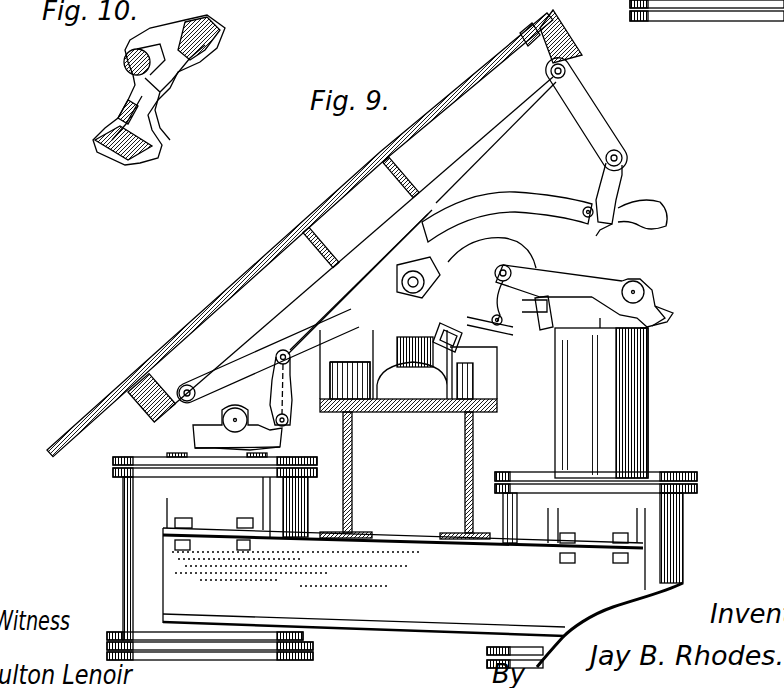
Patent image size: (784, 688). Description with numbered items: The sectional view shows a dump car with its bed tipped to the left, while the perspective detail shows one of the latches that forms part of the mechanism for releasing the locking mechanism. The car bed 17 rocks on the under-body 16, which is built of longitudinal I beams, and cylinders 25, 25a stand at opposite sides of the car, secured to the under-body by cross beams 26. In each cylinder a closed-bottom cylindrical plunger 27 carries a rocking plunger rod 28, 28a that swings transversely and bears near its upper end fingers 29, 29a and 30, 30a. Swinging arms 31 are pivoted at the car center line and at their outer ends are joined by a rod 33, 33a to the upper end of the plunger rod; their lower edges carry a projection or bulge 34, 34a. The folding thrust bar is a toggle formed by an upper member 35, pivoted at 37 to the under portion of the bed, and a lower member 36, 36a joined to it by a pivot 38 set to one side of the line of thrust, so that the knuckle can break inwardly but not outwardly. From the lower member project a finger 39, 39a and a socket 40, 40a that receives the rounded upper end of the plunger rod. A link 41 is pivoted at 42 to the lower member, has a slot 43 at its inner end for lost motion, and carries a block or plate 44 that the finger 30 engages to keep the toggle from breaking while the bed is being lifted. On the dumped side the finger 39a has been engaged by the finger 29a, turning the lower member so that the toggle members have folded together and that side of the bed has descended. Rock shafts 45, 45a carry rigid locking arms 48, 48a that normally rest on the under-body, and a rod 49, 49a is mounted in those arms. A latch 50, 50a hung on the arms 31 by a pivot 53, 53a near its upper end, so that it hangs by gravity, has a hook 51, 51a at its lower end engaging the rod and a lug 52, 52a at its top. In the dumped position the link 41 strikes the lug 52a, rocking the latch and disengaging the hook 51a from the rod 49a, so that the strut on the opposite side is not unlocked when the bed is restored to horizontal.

In FIG. 9, the under-body 16 is at (465, 498).
In FIG. 9, the car bed 17 is at (52, 444).
In FIG. 9, the cylinder 25 is at (735, 2).
In FIG. 9, the cylinder 25a is at (128, 500).
In FIG. 9, the cross beams 26 is at (422, 612).
In FIG. 9, the cylindrical plunger 27 is at (630, 403).
In FIG. 9, the plunger rod 28 is at (650, 334).
In FIG. 9, the plunger rod 28a is at (220, 447).
In FIG. 9, the finger 29 is at (668, 318).
In FIG. 9, the finger 29a is at (195, 425).
In FIG. 9, the finger 30 is at (606, 289).
In FIG. 9, the finger 30a is at (238, 500).
In FIG. 9, the swinging arms 31 is at (552, 311).
In FIG. 9, the rod 33 is at (645, 290).
In FIG. 9, the rod 33a is at (237, 440).
In FIG. 9, the projection or bulge 34 is at (546, 328).
In FIG. 9, the projection or bulge 34a is at (275, 340).
In FIG. 9, the upper toggle member 35 is at (582, 95).
In FIG. 9, the lower toggle member 36 is at (635, 172).
In FIG. 9, the lower toggle member 36a is at (255, 378).
In FIG. 9, the pivot 37 is at (551, 88).
In FIG. 9, the pivot 38 is at (625, 160).
In FIG. 9, the finger 39 is at (660, 210).
In FIG. 9, the finger 39a is at (187, 385).
In FIG. 9, the socket 40 is at (652, 228).
In FIG. 9, the socket 40a is at (237, 385).
In FIG. 9, the link 41 is at (535, 198).
In FIG. 9, the pivot 42 is at (584, 209).
In FIG. 9, the slot 43 is at (478, 252).
In FIG. 9, the block or plate 44 is at (559, 268).
In FIG. 9, the shaft 45 is at (465, 340).
In FIG. 9, the shaft 45a is at (468, 320).
In FIG. 9, the locking arm 48 is at (503, 321).
In FIG. 9, the locking arm 48a is at (362, 425).
In FIG. 9, the rod 49 is at (497, 345).
In FIG. 9, the rod 49a is at (330, 412).
In FIG. 10, the latch 50 is at (140, 100).
In FIG. 9, the latch 50 is at (490, 292).
In FIG. 9, the latch 50a is at (410, 402).
In FIG. 10, the hook 51 is at (148, 150).
In FIG. 9, the hook 51 is at (492, 326).
In FIG. 9, the hook 51a is at (380, 406).
In FIG. 10, the lug 52 is at (222, 48).
In FIG. 9, the lug 52 is at (510, 268).
In FIG. 9, the lug 52a is at (318, 300).
In FIG. 10, the pivot 53 is at (125, 60).
In FIG. 9, the pivot 53 is at (505, 266).
In FIG. 9, the pivot 53a is at (405, 277).